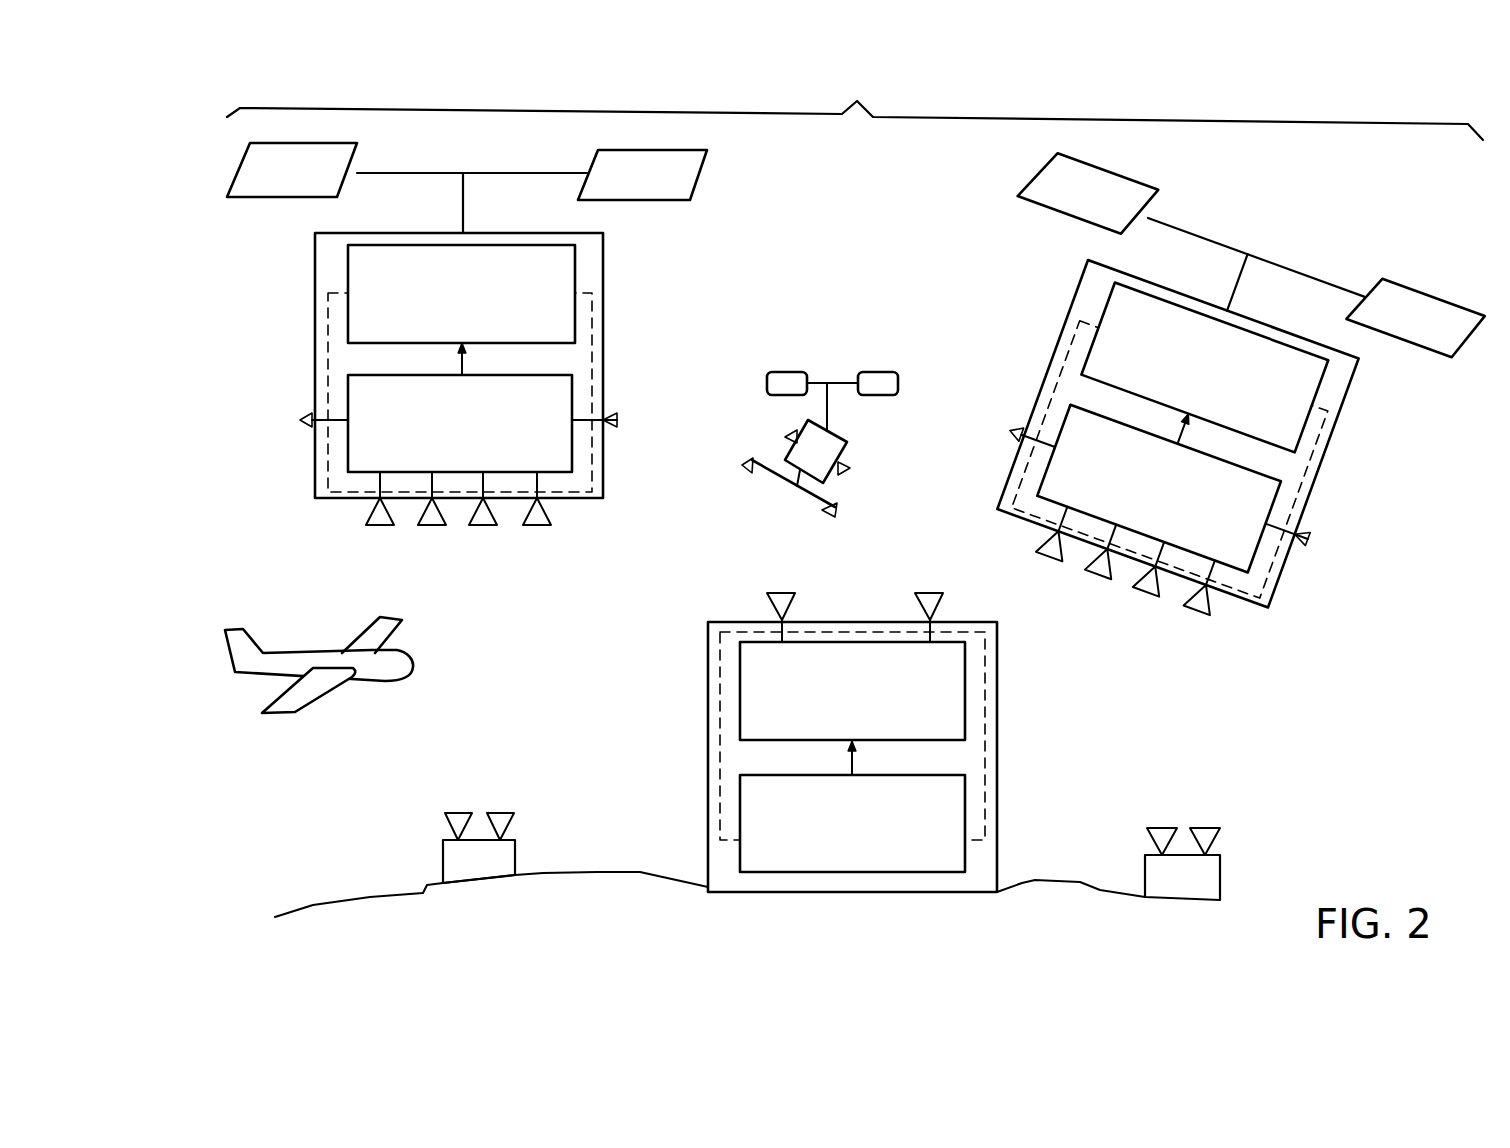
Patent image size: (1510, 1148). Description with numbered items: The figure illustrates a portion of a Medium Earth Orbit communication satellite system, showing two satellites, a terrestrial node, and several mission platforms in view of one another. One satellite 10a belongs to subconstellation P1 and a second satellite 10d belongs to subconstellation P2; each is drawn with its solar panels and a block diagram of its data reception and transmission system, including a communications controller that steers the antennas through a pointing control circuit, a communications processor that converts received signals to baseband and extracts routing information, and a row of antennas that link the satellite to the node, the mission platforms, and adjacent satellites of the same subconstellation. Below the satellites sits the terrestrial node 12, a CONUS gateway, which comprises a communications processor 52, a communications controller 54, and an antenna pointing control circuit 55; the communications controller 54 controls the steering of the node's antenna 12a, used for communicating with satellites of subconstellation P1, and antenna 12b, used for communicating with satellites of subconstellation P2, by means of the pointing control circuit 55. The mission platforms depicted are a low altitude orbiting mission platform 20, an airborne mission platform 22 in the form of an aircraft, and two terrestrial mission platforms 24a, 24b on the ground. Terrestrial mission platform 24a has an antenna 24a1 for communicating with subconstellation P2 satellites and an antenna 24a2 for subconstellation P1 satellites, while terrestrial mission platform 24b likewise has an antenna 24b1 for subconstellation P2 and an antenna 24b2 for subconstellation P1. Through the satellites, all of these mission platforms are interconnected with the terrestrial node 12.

The satellite 10a is at (431, 173).
The satellite 10d is at (1226, 243).
The terrestrial node 12 is at (997, 670).
The antenna 12a is at (928, 592).
The antenna 12b is at (780, 592).
The orbiting mission platform 20 is at (883, 372).
The airborne mission platform 22 is at (325, 652).
The terrestrial mission platform 24a is at (515, 862).
The antenna 24a1 is at (457, 812).
The antenna 24a2 is at (503, 812).
The terrestrial mission platform 24b is at (1220, 865).
The antenna 24b1 is at (1206, 828).
The antenna 24b2 is at (1160, 828).
The communications processor 52 is at (740, 670).
The communications controller 54 is at (740, 853).
The antenna pointing control circuit 55 is at (998, 778).